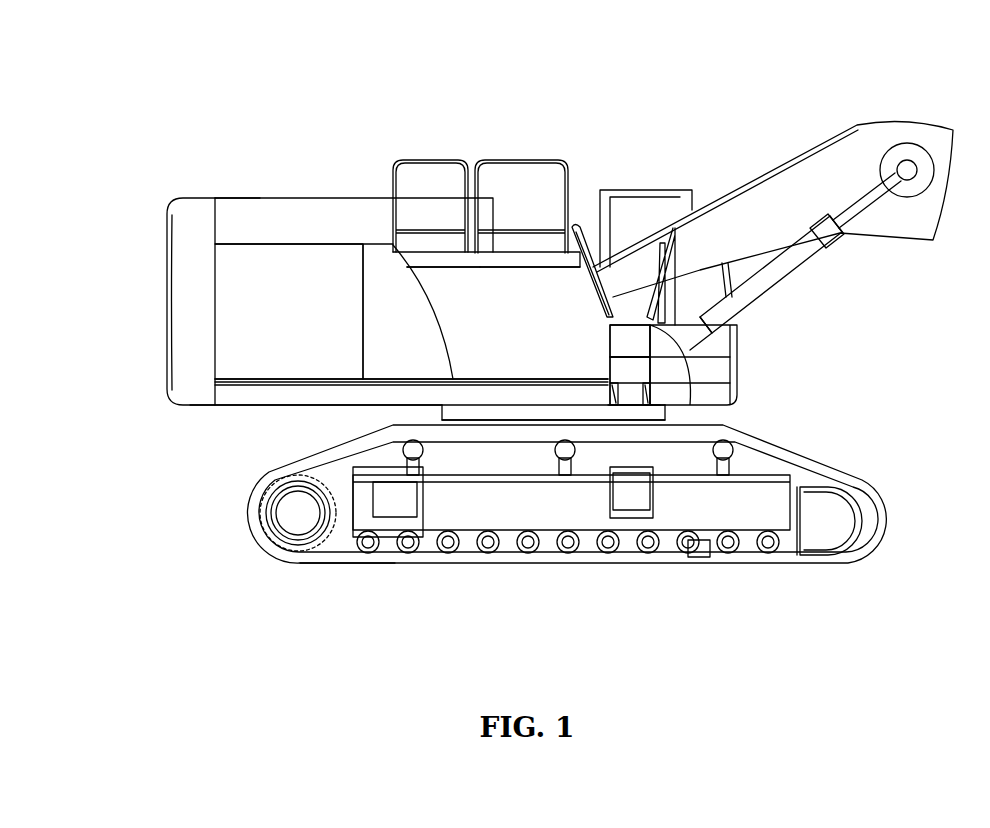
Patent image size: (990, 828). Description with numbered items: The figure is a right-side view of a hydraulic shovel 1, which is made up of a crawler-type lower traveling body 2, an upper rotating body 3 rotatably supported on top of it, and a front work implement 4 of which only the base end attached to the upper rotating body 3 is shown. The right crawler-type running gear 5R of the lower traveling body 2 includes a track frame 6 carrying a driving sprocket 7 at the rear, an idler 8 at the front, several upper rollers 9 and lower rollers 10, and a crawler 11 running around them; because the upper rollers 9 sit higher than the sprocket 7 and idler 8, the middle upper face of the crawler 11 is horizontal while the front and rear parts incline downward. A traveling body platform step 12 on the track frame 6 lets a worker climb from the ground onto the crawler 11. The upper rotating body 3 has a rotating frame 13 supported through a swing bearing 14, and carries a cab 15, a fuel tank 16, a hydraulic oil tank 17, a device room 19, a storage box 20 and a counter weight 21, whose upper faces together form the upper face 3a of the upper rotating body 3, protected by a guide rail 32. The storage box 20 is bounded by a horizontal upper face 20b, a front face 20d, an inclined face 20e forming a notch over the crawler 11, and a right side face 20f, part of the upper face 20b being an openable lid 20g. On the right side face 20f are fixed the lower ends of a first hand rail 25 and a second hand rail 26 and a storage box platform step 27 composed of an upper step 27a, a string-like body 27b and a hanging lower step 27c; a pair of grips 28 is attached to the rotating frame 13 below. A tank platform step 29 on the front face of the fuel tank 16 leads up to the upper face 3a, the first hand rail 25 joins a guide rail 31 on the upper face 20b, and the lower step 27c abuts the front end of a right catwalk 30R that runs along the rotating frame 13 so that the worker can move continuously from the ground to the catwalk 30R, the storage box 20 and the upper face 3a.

The hydraulic shovel 1 is at (466, 77).
The lower traveling body 2 is at (488, 574).
The upper rotating body 3 is at (318, 153).
The upper face of the upper rotating body 3a is at (246, 194).
The front work implement 4 is at (857, 125).
The right crawler-type running gear 5R is at (251, 497).
The track frame 6 is at (552, 502).
The driving sprocket 7 is at (292, 515).
The idler 8 is at (850, 484).
The upper rollers 9 is at (414, 460).
The lower rollers 10 is at (640, 408).
The crawler 11 is at (767, 443).
The traveling body platform step 12 is at (390, 520).
The rotating frame 13 is at (252, 398).
The swing bearing 14 is at (514, 413).
The cab 15 is at (656, 194).
The fuel tank 16 is at (531, 258).
The hydraulic oil tank 17 is at (445, 255).
The device room 19 is at (250, 297).
The storage box 20 is at (749, 253).
The upper face of the storage box 20b is at (625, 325).
The front face of the storage box 20d is at (700, 360).
The inclined face 20e is at (700, 376).
The right side face of the storage box 20f is at (608, 322).
The lid 20g is at (725, 320).
The counter weight 21 is at (190, 222).
The first hand rail 25 is at (722, 345).
The second hand rail 26 is at (608, 338).
The storage box platform step 27 is at (610, 367).
The upper step 27a is at (610, 351).
The string-like body 27b is at (608, 379).
The lower step 27c is at (700, 556).
The grips 28 is at (700, 398).
The tank platform step 29 is at (588, 265).
The right catwalk 30R is at (410, 378).
The guide rail 31 is at (672, 238).
The guide rail 32 is at (420, 160).